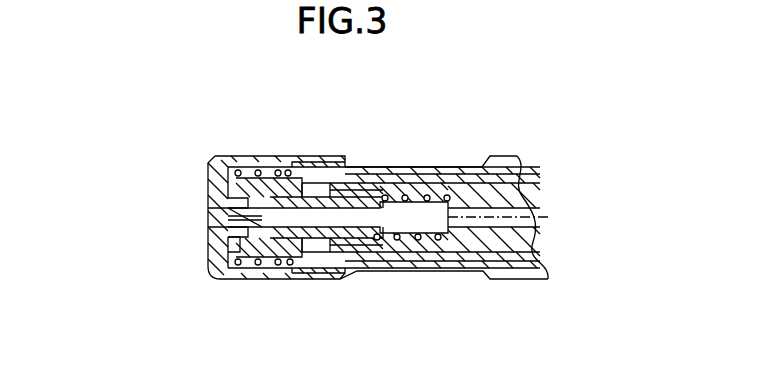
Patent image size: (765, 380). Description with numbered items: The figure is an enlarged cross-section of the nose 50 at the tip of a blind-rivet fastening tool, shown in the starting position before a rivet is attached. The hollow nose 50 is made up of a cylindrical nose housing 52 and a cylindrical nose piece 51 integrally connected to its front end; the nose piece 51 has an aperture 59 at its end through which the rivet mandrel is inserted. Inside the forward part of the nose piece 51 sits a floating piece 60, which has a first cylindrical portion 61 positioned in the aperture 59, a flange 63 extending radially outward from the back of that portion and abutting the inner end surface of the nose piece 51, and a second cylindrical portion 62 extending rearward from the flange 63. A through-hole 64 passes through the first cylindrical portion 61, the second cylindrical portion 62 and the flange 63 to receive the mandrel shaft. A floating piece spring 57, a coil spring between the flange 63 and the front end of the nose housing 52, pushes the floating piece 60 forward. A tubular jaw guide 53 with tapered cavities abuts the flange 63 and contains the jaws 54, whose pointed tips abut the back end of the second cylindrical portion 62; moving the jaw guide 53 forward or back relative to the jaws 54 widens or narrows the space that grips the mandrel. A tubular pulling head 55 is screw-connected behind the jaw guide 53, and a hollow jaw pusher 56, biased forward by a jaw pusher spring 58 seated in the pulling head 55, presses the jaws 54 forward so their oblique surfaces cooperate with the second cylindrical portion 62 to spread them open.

The nose 50 is at (312, 80).
The nose piece 51 is at (320, 156).
The nose housing 52 is at (388, 167).
The jaw guide 53 is at (240, 169).
The jaws 54 is at (260, 170).
The pulling head 55 is at (413, 167).
The jaw pusher 56 is at (350, 172).
The floating piece spring 57 is at (257, 266).
The jaw pusher spring 58 is at (419, 240).
The aperture 59 is at (211, 203).
The floating piece 60 is at (225, 256).
The first cylindrical portion 61 is at (210, 230).
The second cylindrical portion 62 is at (211, 218).
The flange 63 is at (213, 172).
The through-hole 64 is at (211, 227).